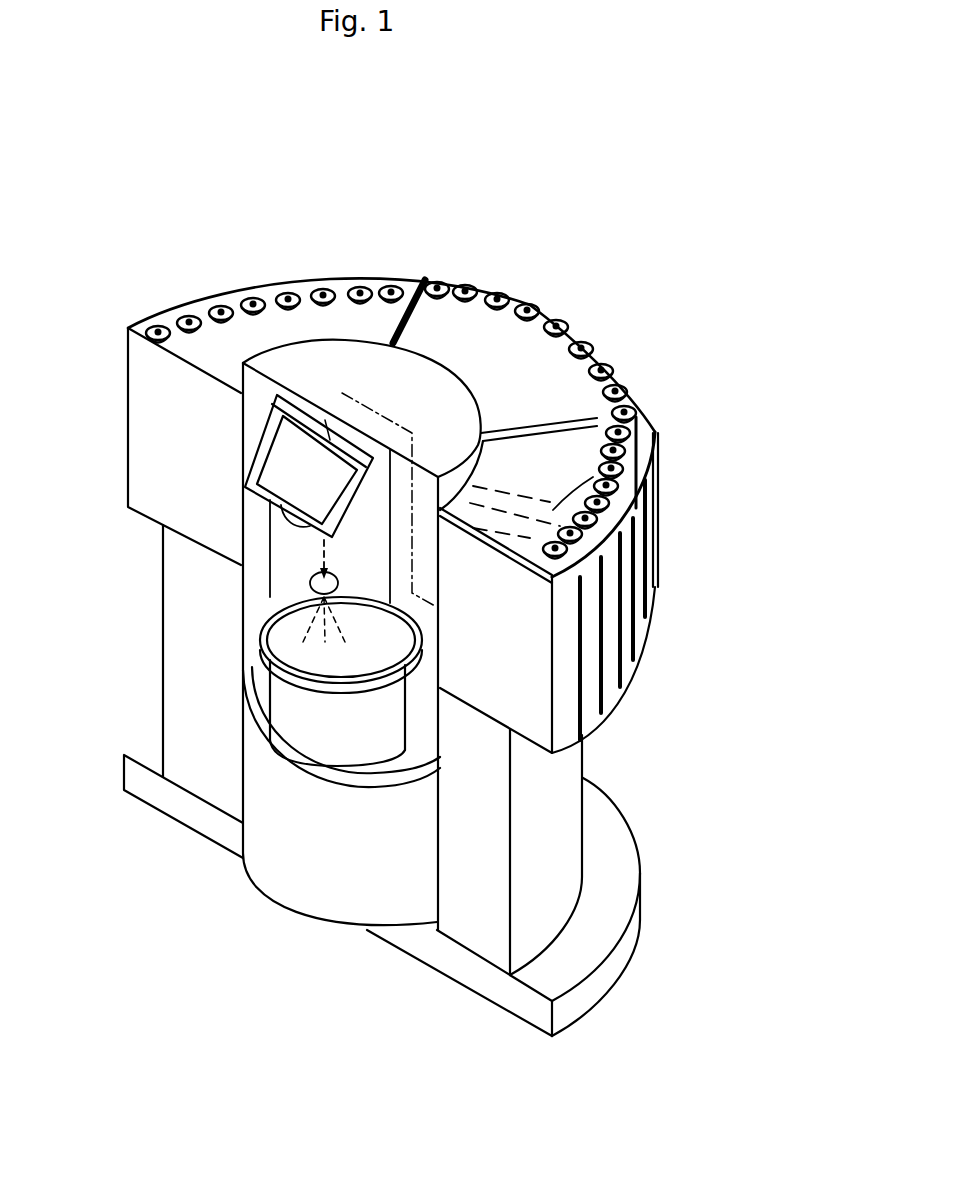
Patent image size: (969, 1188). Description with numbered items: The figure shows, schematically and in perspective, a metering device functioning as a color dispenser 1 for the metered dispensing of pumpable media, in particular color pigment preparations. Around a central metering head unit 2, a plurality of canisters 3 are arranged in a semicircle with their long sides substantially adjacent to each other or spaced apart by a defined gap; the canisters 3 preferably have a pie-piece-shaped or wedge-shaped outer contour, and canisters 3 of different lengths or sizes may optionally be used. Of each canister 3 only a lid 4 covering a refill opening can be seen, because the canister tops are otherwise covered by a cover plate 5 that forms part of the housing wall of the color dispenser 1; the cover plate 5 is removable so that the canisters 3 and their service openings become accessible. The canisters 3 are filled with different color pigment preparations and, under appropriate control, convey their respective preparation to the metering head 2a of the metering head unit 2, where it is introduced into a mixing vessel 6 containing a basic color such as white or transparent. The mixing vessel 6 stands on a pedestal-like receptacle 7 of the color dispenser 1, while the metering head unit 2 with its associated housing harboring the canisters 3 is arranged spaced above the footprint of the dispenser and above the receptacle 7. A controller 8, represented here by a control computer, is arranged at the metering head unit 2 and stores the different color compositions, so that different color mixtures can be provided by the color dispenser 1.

The color dispenser 1 is at (658, 228).
The metering head unit 2 is at (286, 553).
The metering head 2a is at (309, 576).
The canisters 3 is at (628, 418).
The lid 4 is at (298, 280).
The cover plate 5 is at (513, 477).
The mixing vessel 6 is at (324, 737).
The receptacle 7 is at (321, 862).
The controller 8 is at (297, 488).